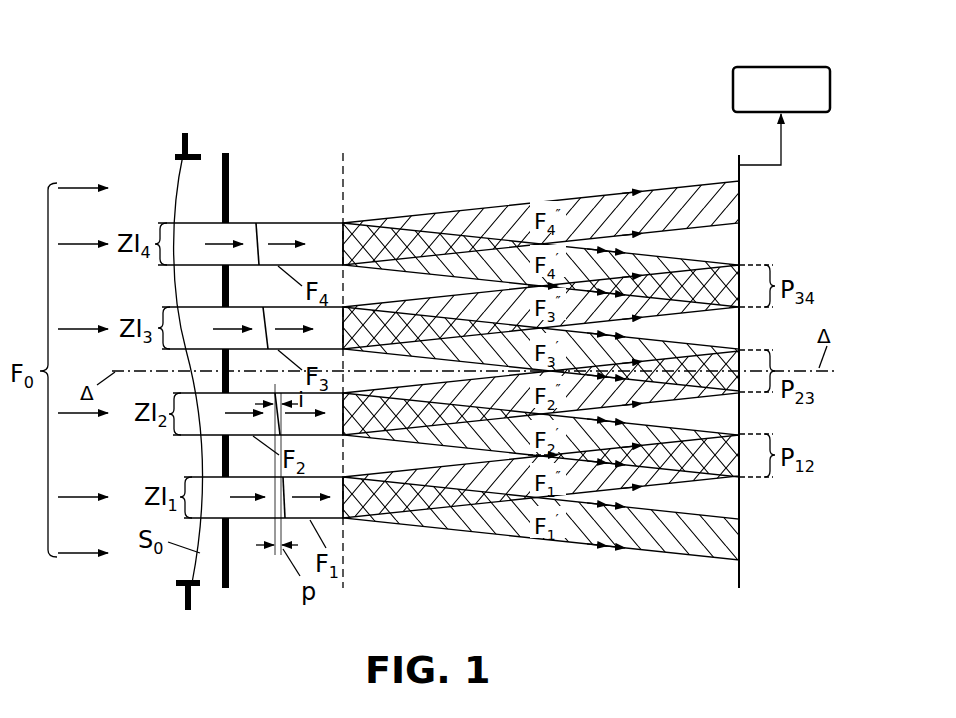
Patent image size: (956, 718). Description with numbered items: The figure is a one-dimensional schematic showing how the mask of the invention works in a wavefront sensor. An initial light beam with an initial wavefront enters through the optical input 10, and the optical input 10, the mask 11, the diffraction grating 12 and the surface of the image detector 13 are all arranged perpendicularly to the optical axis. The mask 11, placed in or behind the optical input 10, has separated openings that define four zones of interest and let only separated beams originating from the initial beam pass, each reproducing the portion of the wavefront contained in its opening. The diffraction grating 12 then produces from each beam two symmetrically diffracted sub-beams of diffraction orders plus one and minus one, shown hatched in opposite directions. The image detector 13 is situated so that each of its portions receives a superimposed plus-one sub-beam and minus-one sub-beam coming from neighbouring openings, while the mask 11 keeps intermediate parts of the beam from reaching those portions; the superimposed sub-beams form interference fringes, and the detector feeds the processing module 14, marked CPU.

The optical input 10 is at (181, 153).
The mask with separate openings 11 is at (232, 568).
The diffraction grating 12 is at (345, 573).
The surface of an image detector 13 is at (741, 582).
The processing module 14 is at (812, 65).